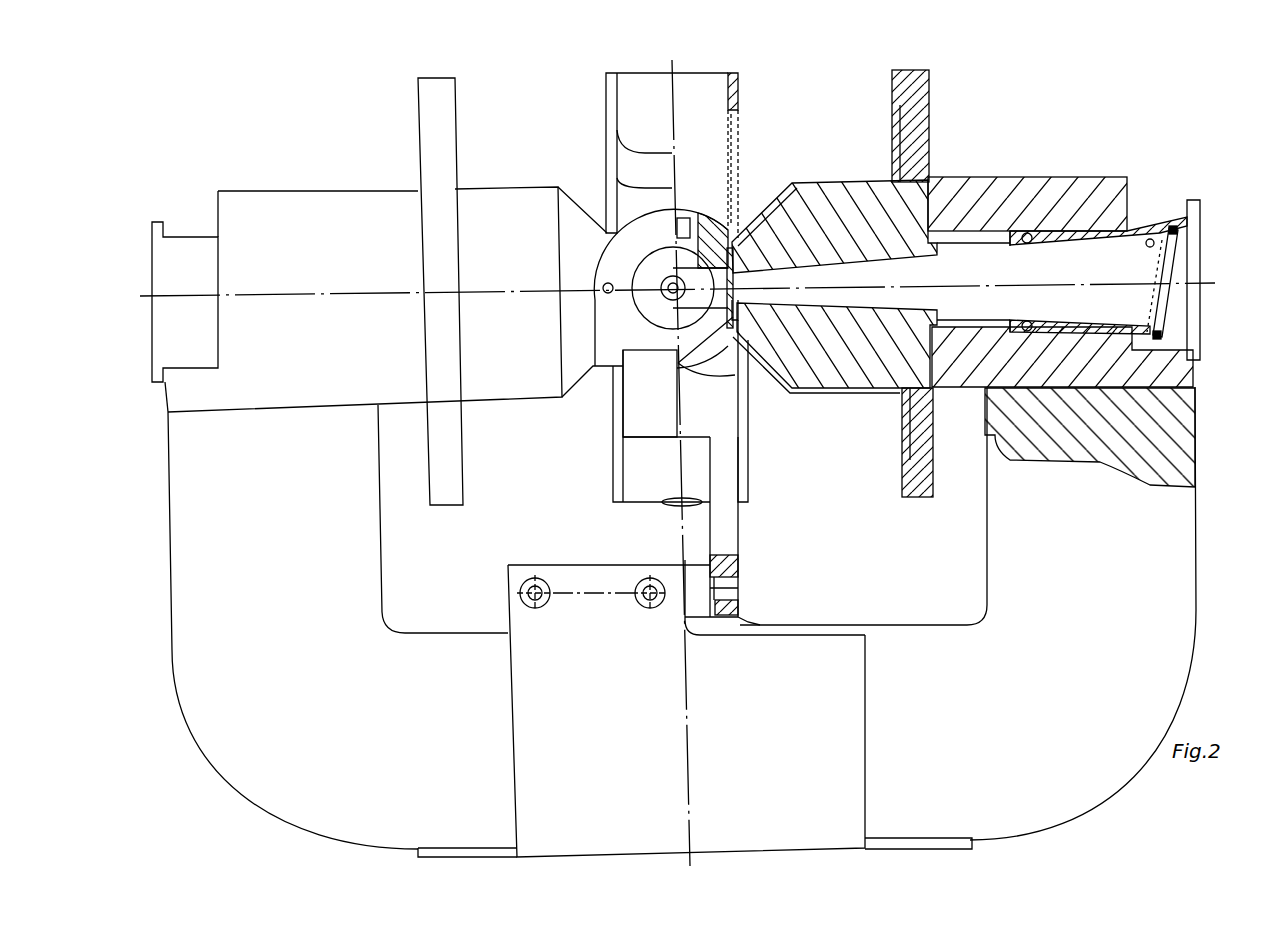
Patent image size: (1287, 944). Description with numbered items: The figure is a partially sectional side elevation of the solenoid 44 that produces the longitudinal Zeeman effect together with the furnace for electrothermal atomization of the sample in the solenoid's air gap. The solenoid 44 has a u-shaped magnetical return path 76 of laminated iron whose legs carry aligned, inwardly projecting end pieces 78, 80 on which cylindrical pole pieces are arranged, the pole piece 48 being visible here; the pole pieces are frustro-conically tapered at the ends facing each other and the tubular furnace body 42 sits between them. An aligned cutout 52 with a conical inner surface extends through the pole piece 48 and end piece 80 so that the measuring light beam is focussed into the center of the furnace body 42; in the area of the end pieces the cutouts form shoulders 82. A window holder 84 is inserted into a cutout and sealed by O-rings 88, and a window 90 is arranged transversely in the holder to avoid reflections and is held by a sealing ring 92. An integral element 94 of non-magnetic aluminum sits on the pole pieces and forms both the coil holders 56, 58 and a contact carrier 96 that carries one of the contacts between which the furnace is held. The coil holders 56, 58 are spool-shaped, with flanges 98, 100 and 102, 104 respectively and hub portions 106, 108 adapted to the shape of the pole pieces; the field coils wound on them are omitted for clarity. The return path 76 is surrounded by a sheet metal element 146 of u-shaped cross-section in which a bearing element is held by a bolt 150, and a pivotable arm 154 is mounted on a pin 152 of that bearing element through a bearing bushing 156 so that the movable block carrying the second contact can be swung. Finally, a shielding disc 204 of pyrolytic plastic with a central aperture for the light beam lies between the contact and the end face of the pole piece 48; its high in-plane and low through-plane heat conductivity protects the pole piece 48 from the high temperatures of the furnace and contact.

The furnace body 42 is at (688, 248).
The solenoid 44 is at (922, 835).
The pole piece 48 is at (866, 355).
The cutout 52 is at (832, 300).
The coil holder 56 is at (600, 467).
The coil holder 58 is at (842, 477).
The magnetical return path 76 is at (1112, 748).
The end piece 78 is at (272, 212).
The end piece 80 is at (1066, 182).
The shoulder 82 is at (992, 232).
The window holder 84 is at (188, 250).
The O-ring 88 is at (1027, 232).
The window 90 is at (1158, 278).
The sealing ring 92 is at (1160, 336).
The integral element 94 is at (909, 509).
The contact carrier 96 is at (640, 440).
The flange 98 is at (440, 487).
The flange 100 is at (612, 72).
The flange 102 is at (740, 86).
The flange 104 is at (935, 495).
The hub portion 106 is at (500, 380).
The hub portion 108 is at (790, 400).
The sheet metal element 146 is at (816, 825).
The bolt 150 is at (537, 588).
The pin 152 is at (745, 598).
The pivotable arm 154 is at (738, 538).
The bearing bushing 156 is at (742, 625).
The shielding disc 204 is at (760, 232).